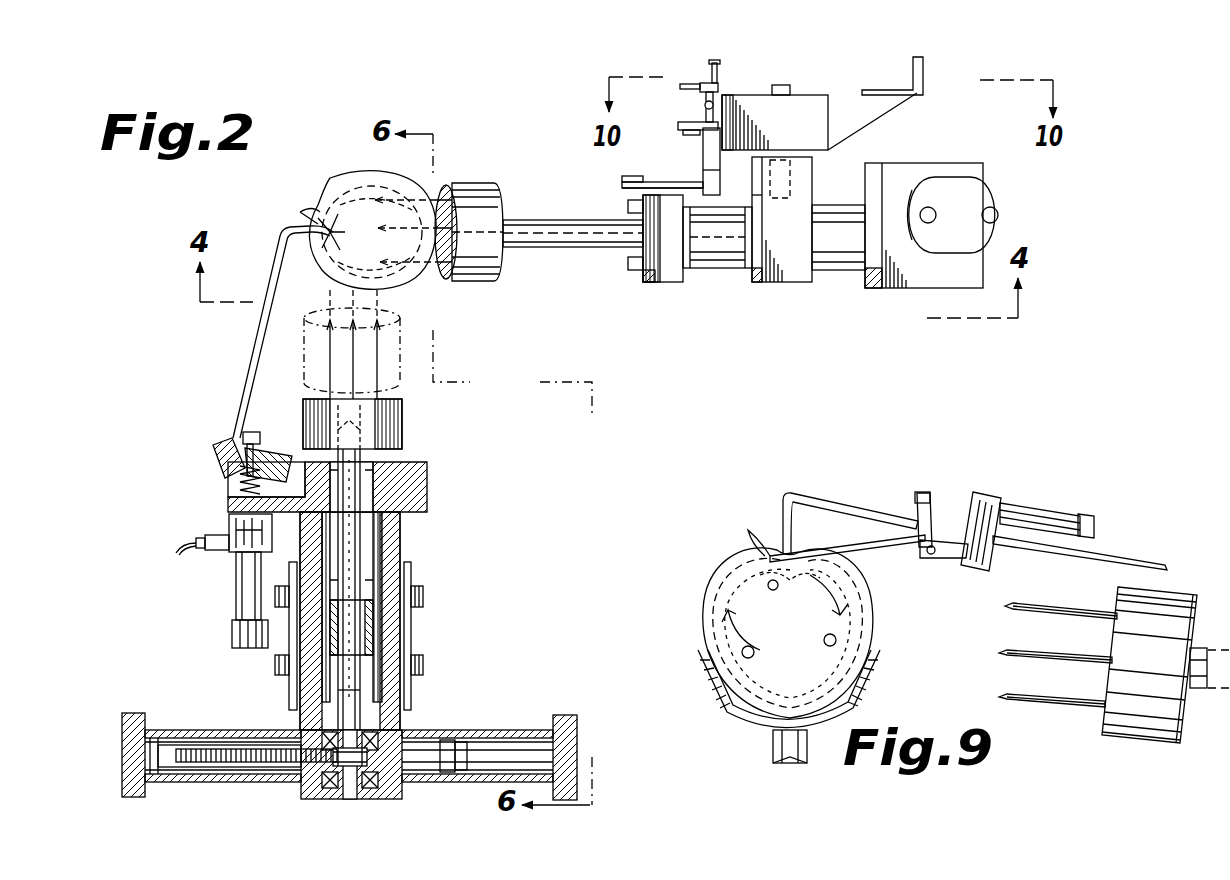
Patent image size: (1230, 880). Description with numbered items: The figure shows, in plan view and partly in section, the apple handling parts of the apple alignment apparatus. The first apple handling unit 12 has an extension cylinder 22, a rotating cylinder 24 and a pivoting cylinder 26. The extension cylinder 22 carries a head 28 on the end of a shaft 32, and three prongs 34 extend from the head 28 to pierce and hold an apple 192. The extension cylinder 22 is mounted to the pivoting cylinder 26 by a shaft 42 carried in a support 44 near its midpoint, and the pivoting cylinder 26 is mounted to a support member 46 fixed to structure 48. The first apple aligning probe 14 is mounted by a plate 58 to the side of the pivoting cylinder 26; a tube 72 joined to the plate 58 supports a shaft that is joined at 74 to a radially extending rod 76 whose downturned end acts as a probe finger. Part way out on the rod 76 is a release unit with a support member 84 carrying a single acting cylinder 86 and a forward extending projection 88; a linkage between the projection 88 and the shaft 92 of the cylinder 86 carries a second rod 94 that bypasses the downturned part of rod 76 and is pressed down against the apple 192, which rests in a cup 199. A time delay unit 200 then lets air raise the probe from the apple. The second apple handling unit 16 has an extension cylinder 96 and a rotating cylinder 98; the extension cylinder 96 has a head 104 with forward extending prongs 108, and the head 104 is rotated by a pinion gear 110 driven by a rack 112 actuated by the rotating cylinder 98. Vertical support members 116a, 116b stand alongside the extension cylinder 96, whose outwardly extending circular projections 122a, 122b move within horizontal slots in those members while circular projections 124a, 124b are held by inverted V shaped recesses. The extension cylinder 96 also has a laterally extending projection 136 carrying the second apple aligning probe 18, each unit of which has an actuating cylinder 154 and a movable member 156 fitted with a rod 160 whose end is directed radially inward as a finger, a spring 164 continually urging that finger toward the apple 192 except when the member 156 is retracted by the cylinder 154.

In FIG. 2, the first apple handling unit 12 is at (967, 159).
In FIG. 2, the first apple aligning probe 14 is at (672, 122).
In FIG. 9, the first apple aligning probe 14 is at (1078, 492).
In FIG. 2, the second apple handling unit 16 is at (423, 566).
In FIG. 2, the second apple aligning probe 18 is at (210, 461).
In FIG. 2, the extension cylinder 22 is at (798, 285).
In FIG. 2, the rotating cylinder 24 is at (927, 293).
In FIG. 2, the pivoting cylinder 26 is at (815, 90).
In FIG. 2, the head 28 is at (478, 183).
In FIG. 9, the head 28 is at (1160, 587).
In FIG. 2, the shaft 32 is at (550, 220).
In FIG. 2, the prongs 34 is at (452, 192).
In FIG. 9, the prongs 34 is at (1073, 697).
In FIG. 2, the shaft 42 is at (793, 178).
In FIG. 2, the support 44 is at (752, 196).
In FIG. 2, the support member 46 is at (890, 118).
In FIG. 2, the structure 48 is at (923, 62).
In FIG. 2, the plate 58 is at (724, 96).
In FIG. 2, the tube 72 is at (703, 152).
In FIG. 2, the joint 74 is at (690, 176).
In FIG. 2, the radially extending rod 76 is at (627, 182).
In FIG. 9, the radially extending rod 76 is at (853, 501).
In FIG. 9, the support member 84 is at (981, 492).
In FIG. 9, the single acting cylinder 86 is at (1030, 507).
In FIG. 9, the forward extending projection 88 is at (957, 566).
In FIG. 9, the shaft 92 is at (930, 492).
In FIG. 9, the second rod 94 is at (885, 548).
In FIG. 2, the extension cylinder 96 is at (408, 537).
In FIG. 2, the rotating cylinder 98 is at (536, 727).
In FIG. 2, the head 104 is at (403, 421).
In FIG. 2, the prongs 108 is at (377, 362).
In FIG. 2, the pinion gear 110 is at (372, 750).
In FIG. 2, the rack 112 is at (245, 746).
In FIG. 2, the vertical support member 116a is at (289, 648).
In FIG. 2, the vertical support member 116b is at (411, 629).
In FIG. 2, the outwardly extending circular projection 122a is at (275, 665).
In FIG. 2, the outwardly extending circular projection 122b is at (423, 661).
In FIG. 2, the outwardly extending circular projection 124a is at (275, 593).
In FIG. 2, the outwardly extending circular projection 124b is at (423, 595).
In FIG. 2, the laterally extending projection 136 is at (428, 481).
In FIG. 2, the actuating cylinder 154 is at (236, 603).
In FIG. 2, the movable member 156 is at (277, 445).
In FIG. 2, the rod 160 is at (253, 328).
In FIG. 2, the spring 164 is at (238, 476).
In FIG. 2, the apple 192 is at (345, 172).
In FIG. 9, the apple 192 is at (715, 573).
In FIG. 9, the cup 199 is at (727, 707).
In FIG. 2, the time delay unit 200 is at (690, 107).